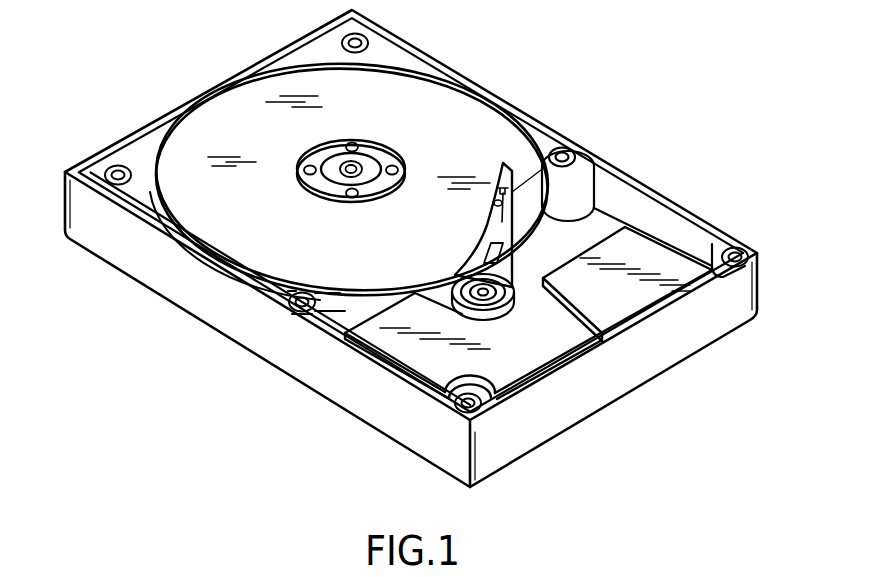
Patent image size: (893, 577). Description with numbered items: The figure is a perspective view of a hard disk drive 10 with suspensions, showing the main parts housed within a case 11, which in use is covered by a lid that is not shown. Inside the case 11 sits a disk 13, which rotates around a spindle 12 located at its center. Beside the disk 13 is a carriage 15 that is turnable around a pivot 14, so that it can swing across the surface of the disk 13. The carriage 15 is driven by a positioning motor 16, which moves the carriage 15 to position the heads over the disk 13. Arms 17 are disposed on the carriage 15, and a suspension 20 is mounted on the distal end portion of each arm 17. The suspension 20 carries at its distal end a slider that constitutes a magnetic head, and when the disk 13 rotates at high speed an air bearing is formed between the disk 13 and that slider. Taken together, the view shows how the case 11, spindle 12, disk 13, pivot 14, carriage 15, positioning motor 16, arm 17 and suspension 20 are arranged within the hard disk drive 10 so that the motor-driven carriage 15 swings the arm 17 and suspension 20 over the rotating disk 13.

The hard disk drive 10 is at (658, 88).
The case 11 is at (237, 330).
The spindle 12 is at (363, 160).
The disk 13 is at (452, 108).
The pivot 14 is at (487, 300).
The carriage 15 is at (508, 259).
The positioning motor 16 is at (400, 380).
The arm 17 is at (559, 147).
The suspension 20 is at (508, 178).